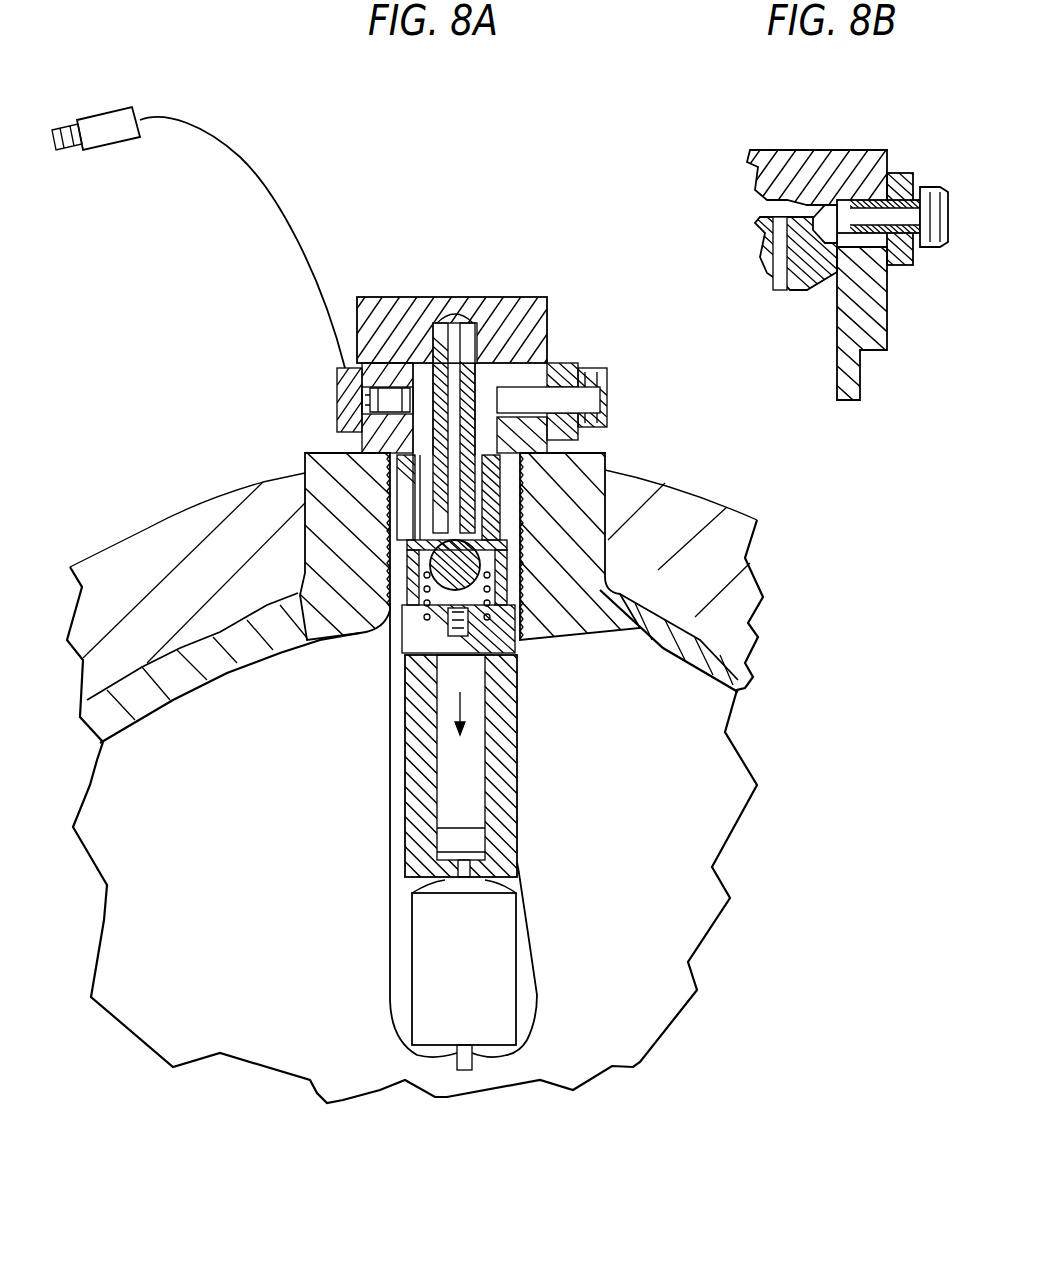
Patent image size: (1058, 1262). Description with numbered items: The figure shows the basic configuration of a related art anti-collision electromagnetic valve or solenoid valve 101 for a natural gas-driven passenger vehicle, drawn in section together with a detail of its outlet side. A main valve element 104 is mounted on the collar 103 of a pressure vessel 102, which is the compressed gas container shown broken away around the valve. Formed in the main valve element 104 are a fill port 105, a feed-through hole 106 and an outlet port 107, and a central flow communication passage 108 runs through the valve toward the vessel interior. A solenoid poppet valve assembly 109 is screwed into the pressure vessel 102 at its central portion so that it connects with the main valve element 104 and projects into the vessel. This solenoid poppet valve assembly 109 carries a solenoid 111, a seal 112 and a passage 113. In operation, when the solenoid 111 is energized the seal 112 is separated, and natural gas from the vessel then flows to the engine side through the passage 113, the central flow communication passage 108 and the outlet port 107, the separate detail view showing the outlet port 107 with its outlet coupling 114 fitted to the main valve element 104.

In FIG. 8A, the anti-collision electromagnetic valve 101 is at (410, 243).
In FIG. 8A, the pressure vessel 102 is at (222, 683).
In FIG. 8A, the collar 103 is at (317, 498).
In FIG. 8A, the main valve element 104 is at (538, 290).
In FIG. 8A, the fill port 105 is at (598, 365).
In FIG. 8A, the feed-through hole 106 is at (352, 440).
In FIG. 8B, the outlet port 107 is at (857, 243).
In FIG. 8A, the central flow communication passage 108 is at (455, 470).
In FIG. 8A, the solenoid poppet valve assembly 109 is at (598, 690).
In FIG. 8A, the solenoid 111 is at (532, 801).
In FIG. 8A, the seal 112 is at (500, 612).
In FIG. 8A, the passage 113 is at (497, 603).
In FIG. 8B, the outlet coupling 114 is at (904, 163).